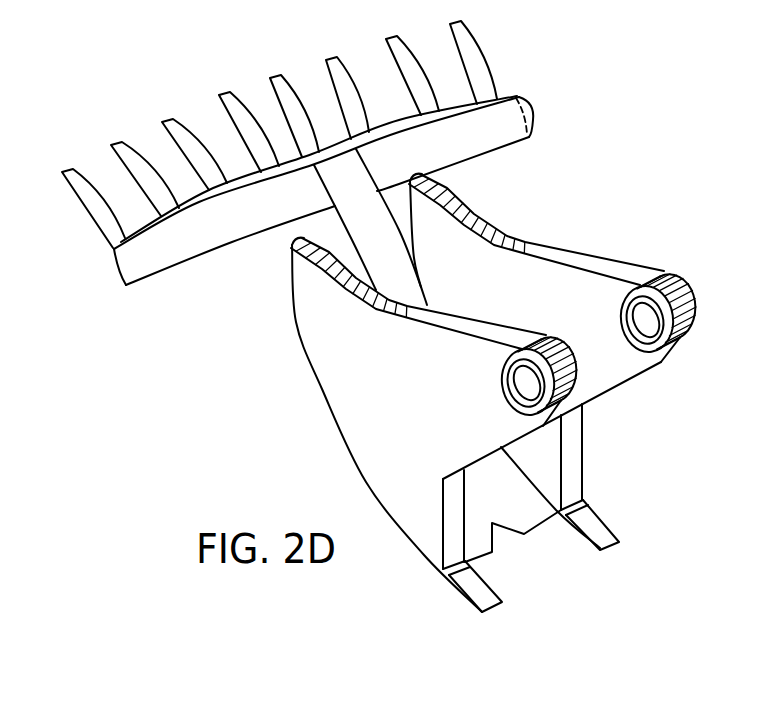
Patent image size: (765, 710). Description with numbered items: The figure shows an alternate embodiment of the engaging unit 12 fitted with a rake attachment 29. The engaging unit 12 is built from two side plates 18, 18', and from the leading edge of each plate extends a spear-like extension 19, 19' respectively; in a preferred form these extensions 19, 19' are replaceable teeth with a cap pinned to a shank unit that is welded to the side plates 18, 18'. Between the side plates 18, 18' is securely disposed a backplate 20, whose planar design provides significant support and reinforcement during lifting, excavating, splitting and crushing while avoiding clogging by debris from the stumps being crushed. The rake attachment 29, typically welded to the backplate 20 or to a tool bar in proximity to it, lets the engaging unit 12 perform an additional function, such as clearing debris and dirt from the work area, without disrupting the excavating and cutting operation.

The engaging unit 12 is at (686, 160).
The side plate 18 is at (476, 425).
The side plate 18' is at (552, 361).
The spear-like extension 19 is at (481, 565).
The spear-like extension 19' is at (620, 477).
The backplate 20 is at (530, 532).
The rake attachment 29 is at (518, 93).